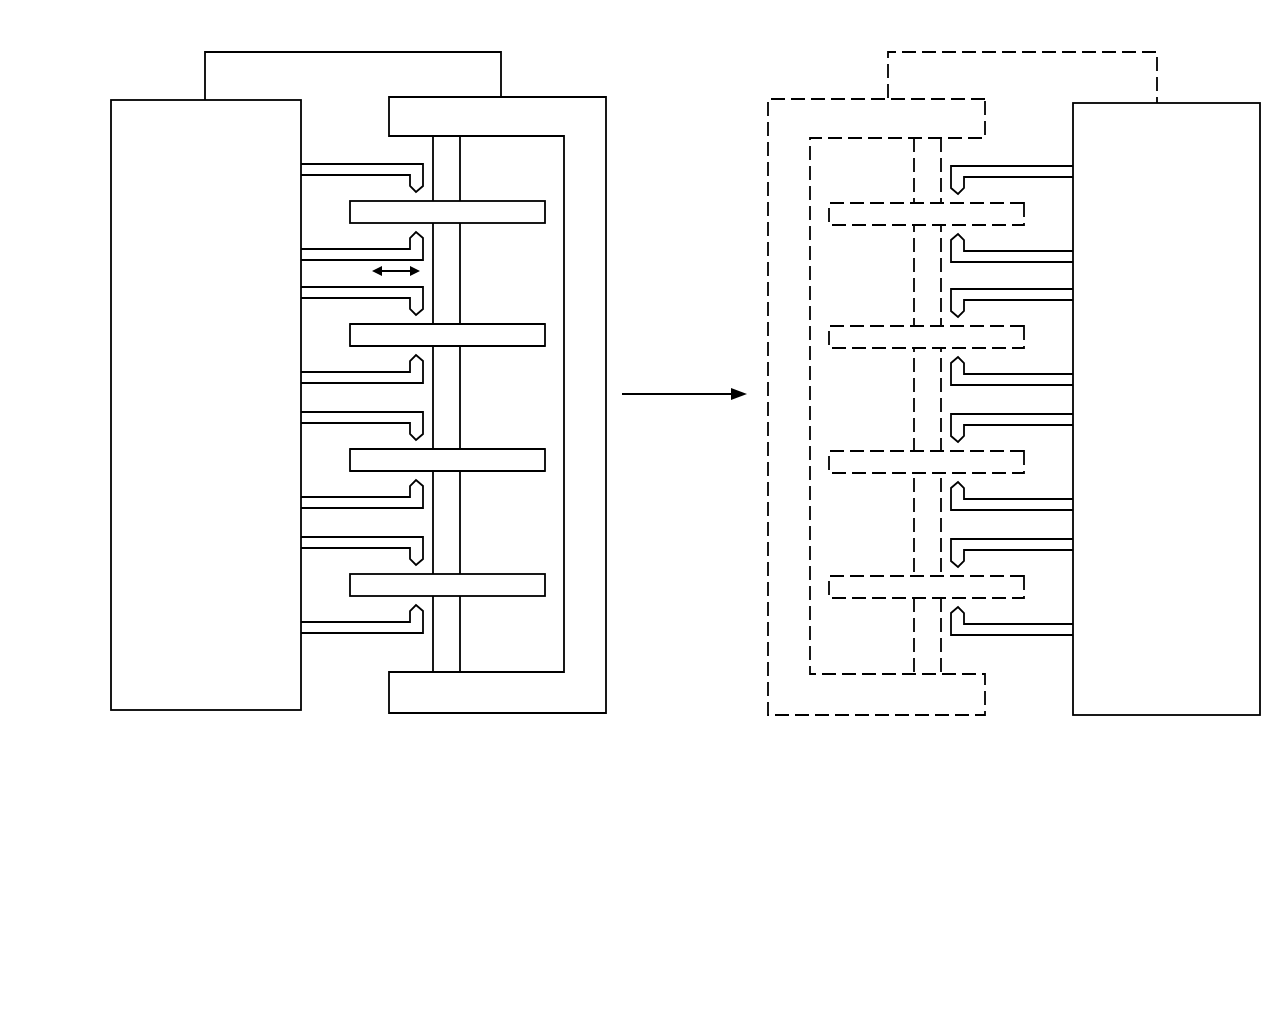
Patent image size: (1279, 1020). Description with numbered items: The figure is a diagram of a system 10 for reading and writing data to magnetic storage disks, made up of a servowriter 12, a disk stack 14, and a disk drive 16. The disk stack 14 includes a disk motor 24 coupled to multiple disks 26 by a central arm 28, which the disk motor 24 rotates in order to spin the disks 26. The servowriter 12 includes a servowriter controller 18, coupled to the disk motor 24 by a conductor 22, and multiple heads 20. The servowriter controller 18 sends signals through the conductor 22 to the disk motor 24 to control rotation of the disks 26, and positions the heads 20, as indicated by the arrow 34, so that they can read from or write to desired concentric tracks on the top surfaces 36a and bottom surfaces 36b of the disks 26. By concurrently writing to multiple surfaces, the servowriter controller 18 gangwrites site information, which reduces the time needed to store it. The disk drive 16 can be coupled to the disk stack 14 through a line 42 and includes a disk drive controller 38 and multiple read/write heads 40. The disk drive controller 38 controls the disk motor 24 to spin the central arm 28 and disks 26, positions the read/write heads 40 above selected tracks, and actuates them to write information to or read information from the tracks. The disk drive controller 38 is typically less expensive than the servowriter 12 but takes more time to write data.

The system 10 is at (624, 756).
The servowriter 12 is at (316, 722).
The disk stack 14 is at (477, 727).
The disk drive 16 is at (1081, 740).
The servowriter controller 18 is at (255, 710).
The heads 20 is at (332, 163).
The conductor 22 is at (452, 51).
The disk motor 24 is at (610, 191).
The disks 26 is at (523, 200).
The central arm 28 is at (463, 173).
The arrow 34 is at (392, 275).
The top surfaces 36a is at (488, 323).
The bottom surfaces 36b is at (488, 347).
The disk drive controller 38 is at (1225, 715).
The read/write heads 40 is at (1037, 556).
The line 42 is at (1026, 57).